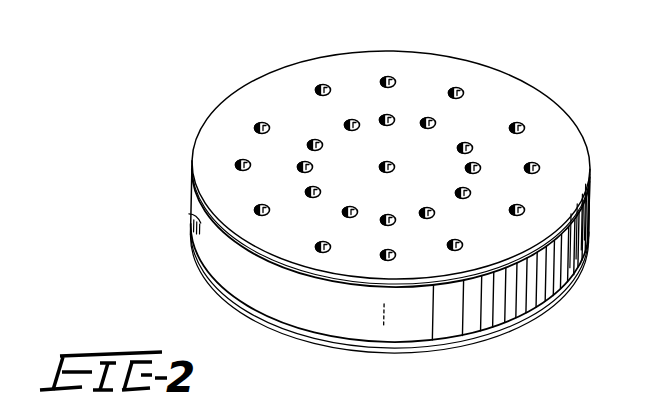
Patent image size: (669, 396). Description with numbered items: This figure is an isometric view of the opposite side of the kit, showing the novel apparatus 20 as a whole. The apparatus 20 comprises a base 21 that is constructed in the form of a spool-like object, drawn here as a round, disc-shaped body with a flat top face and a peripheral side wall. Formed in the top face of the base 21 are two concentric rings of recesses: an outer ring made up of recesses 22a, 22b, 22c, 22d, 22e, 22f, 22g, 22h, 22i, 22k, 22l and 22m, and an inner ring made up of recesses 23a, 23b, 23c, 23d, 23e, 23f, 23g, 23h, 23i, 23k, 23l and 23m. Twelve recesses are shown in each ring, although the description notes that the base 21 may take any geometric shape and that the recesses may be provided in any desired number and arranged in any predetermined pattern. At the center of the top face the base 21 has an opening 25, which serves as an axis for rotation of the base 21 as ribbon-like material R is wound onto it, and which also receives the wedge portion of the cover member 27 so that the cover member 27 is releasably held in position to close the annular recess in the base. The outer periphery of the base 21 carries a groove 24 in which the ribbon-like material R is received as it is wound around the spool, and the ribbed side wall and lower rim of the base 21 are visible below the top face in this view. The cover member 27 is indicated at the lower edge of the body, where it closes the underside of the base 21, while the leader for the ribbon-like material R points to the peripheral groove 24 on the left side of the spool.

The apparatus 20 is at (186, 101).
The base 21 is at (567, 155).
The recess 22a is at (392, 75).
The recess 22b is at (465, 78).
The recess 22c is at (519, 122).
The recess 22d is at (536, 155).
The recess 22e is at (520, 205).
The recess 22f is at (462, 244).
The recess 22g is at (395, 256).
The recess 22h is at (330, 250).
The recess 22i is at (263, 207).
The recess 22k is at (238, 167).
The outer aperture 22l is at (265, 130).
The recess 22m is at (336, 71).
The recess 23a is at (387, 117).
The recess 23b is at (423, 106).
The recess 23c is at (463, 143).
The recess 23d is at (479, 154).
The recess 23e is at (465, 193).
The recess 23f is at (435, 213).
The recess 23g is at (386, 214).
The recess 23h is at (345, 210).
The recess 23i is at (321, 188).
The recess 23k is at (298, 167).
The inner aperture 23l is at (321, 145).
The recess 23m is at (350, 121).
The groove 24 is at (193, 226).
The opening 25 is at (389, 162).
The cover member 27 is at (326, 346).
The ribbon-like material R is at (210, 246).